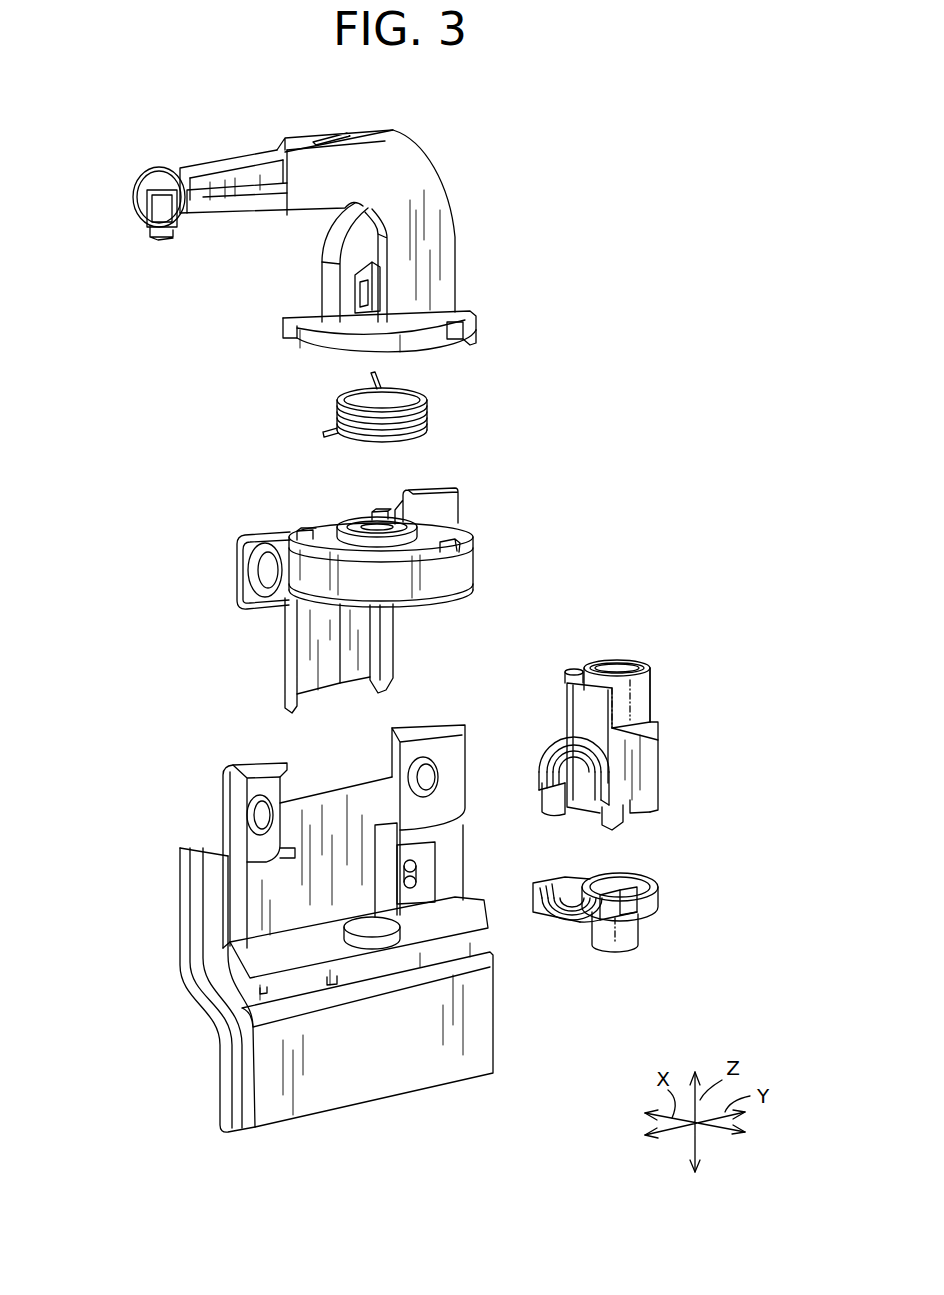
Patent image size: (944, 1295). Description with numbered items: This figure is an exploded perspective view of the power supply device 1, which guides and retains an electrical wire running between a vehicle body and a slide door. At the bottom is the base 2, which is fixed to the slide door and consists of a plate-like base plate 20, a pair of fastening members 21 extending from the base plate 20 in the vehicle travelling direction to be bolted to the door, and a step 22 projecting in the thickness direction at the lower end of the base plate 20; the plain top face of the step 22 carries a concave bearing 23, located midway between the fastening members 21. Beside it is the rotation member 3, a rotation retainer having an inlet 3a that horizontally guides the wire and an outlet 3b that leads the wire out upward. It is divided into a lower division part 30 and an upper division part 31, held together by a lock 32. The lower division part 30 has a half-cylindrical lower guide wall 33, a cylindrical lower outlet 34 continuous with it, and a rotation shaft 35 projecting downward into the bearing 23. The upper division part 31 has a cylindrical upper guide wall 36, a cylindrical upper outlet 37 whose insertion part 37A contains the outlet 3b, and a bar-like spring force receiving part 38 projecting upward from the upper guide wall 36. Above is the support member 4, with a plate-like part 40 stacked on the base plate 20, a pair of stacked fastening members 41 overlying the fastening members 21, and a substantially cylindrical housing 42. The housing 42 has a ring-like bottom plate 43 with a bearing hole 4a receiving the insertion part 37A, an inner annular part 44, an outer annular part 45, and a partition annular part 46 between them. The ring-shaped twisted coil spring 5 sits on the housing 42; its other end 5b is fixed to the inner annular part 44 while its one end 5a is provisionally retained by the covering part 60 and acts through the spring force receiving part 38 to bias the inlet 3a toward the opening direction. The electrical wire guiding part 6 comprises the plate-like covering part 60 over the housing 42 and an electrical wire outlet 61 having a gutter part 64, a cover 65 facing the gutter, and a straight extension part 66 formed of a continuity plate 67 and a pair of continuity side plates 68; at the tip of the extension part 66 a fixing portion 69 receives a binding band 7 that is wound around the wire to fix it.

The power supply device 1 is at (595, 175).
The base 2 is at (463, 727).
The rotation member 3 is at (730, 777).
The inlet 3a is at (550, 813).
The outlet 3b is at (622, 670).
The support member 4 is at (470, 532).
The bearing hole 4a is at (380, 512).
The twisted coil spring 5 is at (427, 410).
The one end of the twisted coil spring 5a is at (378, 383).
The other end of the twisted coil spring 5b is at (322, 432).
The electrical wire guiding part 6 is at (553, 243).
The binding band 7 is at (155, 166).
The base plate 20 is at (350, 790).
The fastening members 21 is at (278, 766).
The step 22 is at (484, 925).
The bearing 23 is at (385, 920).
The lower division part 30 is at (655, 880).
The upper division part 31 is at (655, 785).
The lock 32 is at (620, 825).
The lower guide wall 33 is at (655, 895).
The lower outlet 34 is at (595, 920).
The rotation shaft 35 is at (638, 930).
The upper guide wall 36 is at (556, 738).
The upper outlet 37 is at (655, 678).
The insertion part 37A is at (643, 707).
The spring force receiving part 38 is at (570, 668).
The plate-like part 40 is at (387, 638).
The stacked fastening members 41 is at (445, 497).
The housing 42 is at (457, 548).
The bottom plate 43 is at (450, 590).
The inner annular part 44 is at (360, 515).
The outer annular part 45 is at (455, 577).
The partition annular part 46 is at (355, 543).
The covering part 60 is at (463, 307).
The electrical wire outlet 61 is at (437, 280).
The gutter part 64 is at (347, 128).
The cover 65 is at (292, 212).
The extension part 66 is at (200, 160).
The continuity plate 67 is at (203, 194).
The continuity side plates 68 is at (243, 155).
The fixing portion 69 is at (170, 240).